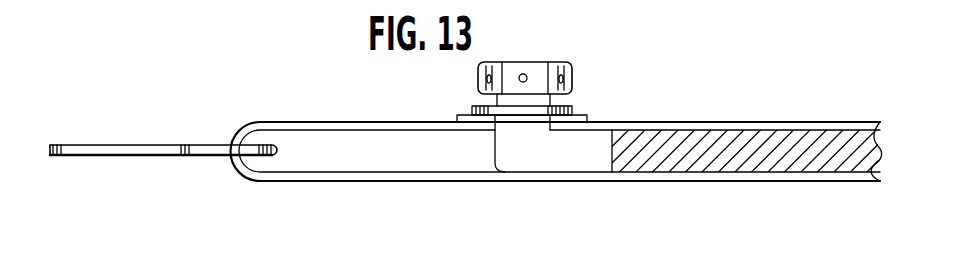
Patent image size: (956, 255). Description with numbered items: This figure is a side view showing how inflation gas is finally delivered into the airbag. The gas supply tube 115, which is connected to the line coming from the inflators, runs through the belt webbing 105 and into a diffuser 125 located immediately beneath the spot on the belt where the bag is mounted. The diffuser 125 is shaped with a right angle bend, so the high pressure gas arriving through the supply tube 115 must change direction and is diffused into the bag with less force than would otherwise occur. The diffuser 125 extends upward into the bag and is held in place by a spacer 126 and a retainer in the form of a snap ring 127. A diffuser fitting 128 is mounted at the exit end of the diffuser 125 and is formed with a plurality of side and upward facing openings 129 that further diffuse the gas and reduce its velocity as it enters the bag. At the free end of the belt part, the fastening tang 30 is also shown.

The fastening tang 30 is at (82, 146).
The belt webbing 105 is at (753, 185).
The gas supply tube 115 is at (758, 137).
The diffuser 125 is at (582, 162).
The spacer 126 is at (458, 115).
The snap ring 127 is at (567, 106).
The diffuser fitting 128 is at (557, 65).
The openings 129 is at (496, 63).